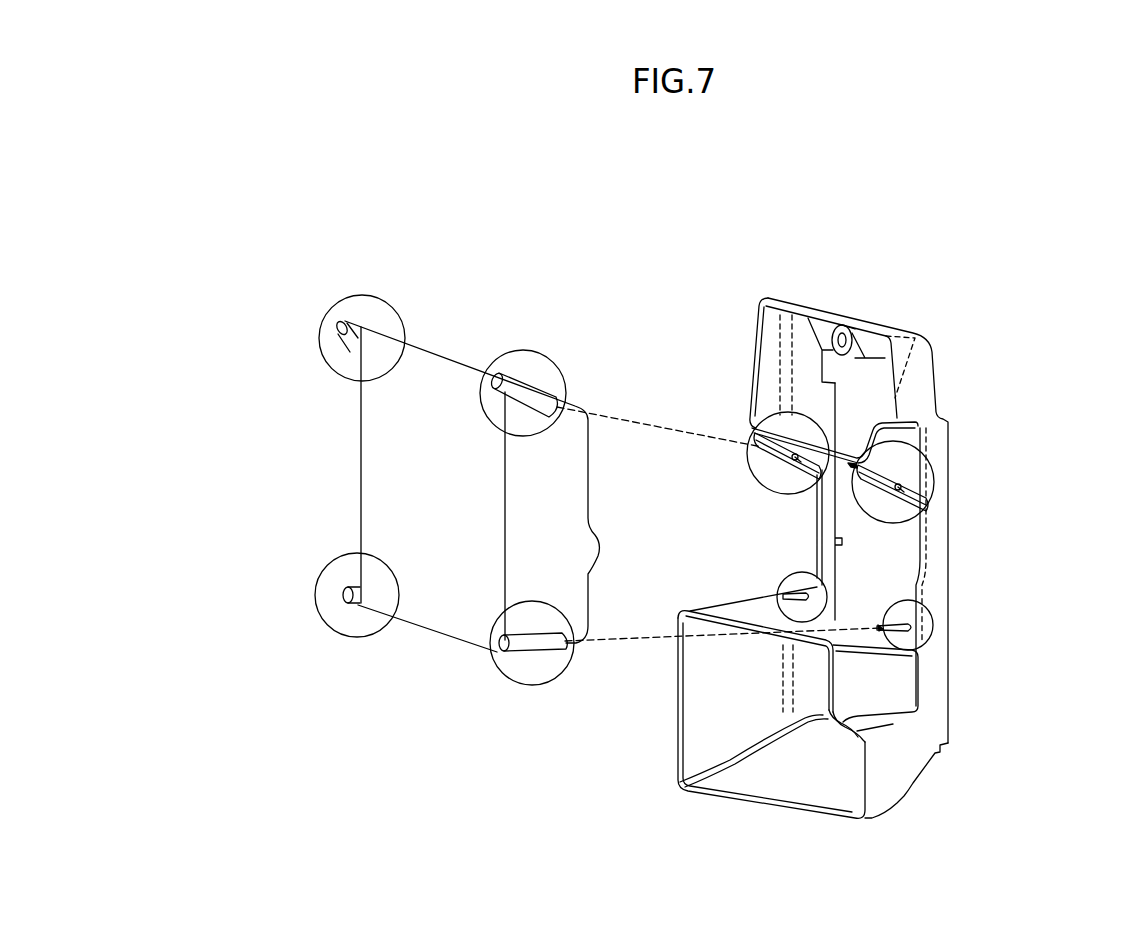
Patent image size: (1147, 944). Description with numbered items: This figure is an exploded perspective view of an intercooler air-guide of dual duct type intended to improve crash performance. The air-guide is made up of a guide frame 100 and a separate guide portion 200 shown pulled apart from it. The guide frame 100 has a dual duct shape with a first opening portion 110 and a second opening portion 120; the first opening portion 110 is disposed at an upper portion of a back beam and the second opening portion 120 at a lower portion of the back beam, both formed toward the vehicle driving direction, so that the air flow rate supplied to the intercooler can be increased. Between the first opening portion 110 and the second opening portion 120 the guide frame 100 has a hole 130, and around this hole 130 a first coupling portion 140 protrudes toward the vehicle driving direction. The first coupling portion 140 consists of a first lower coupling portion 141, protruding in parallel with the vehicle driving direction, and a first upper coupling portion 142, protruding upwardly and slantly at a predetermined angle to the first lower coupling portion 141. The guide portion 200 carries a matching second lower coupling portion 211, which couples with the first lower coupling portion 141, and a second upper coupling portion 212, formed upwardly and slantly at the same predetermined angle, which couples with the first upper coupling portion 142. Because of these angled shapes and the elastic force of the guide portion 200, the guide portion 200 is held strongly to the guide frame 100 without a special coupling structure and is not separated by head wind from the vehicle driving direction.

The guide frame 100 is at (900, 682).
The first opening portion 110 is at (797, 765).
The second opening portion 120 is at (821, 364).
The hole 130 is at (862, 558).
The first coupling portion 140 is at (939, 512).
The first lower coupling portion 141 is at (914, 589).
The first upper coupling portion 142 is at (924, 463).
The guide portion 200 is at (395, 475).
The second lower coupling portion 211 is at (530, 685).
The second upper coupling portion 212 is at (523, 350).